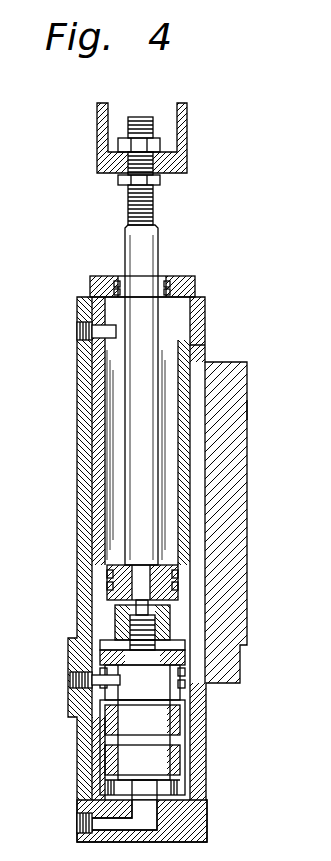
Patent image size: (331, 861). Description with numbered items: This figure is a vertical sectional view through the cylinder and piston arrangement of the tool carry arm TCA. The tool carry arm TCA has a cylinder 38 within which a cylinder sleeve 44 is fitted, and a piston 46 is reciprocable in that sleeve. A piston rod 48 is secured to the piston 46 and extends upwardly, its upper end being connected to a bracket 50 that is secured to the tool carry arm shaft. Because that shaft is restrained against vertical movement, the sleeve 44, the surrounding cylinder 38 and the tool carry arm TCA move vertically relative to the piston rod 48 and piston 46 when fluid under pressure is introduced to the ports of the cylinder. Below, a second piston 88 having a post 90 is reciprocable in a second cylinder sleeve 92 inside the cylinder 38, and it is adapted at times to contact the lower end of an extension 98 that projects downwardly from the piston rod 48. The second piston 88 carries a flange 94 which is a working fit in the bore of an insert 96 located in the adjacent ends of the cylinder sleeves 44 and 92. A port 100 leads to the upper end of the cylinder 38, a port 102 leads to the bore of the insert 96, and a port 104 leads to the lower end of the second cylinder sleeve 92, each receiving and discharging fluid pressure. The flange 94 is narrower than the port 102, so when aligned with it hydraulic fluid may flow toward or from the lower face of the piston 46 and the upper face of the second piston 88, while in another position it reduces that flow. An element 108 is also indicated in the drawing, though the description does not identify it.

The bracket 50 is at (188, 163).
The piston rod 48 is at (150, 245).
The piston 46 is at (180, 592).
The cylinder 38 is at (84, 545).
The tool carry arm TCA is at (236, 542).
The second piston 88 is at (198, 727).
The port 100 is at (78, 331).
The cylinder sleeve 44 is at (175, 460).
The extension 98 is at (140, 617).
The flange 94 is at (187, 653).
The post 90 is at (165, 662).
The insert 96 is at (185, 696).
The port 102 is at (70, 673).
The second cylinder sleeve 92 is at (92, 742).
The port 104 is at (78, 822).
The member 108 is at (330, 388).